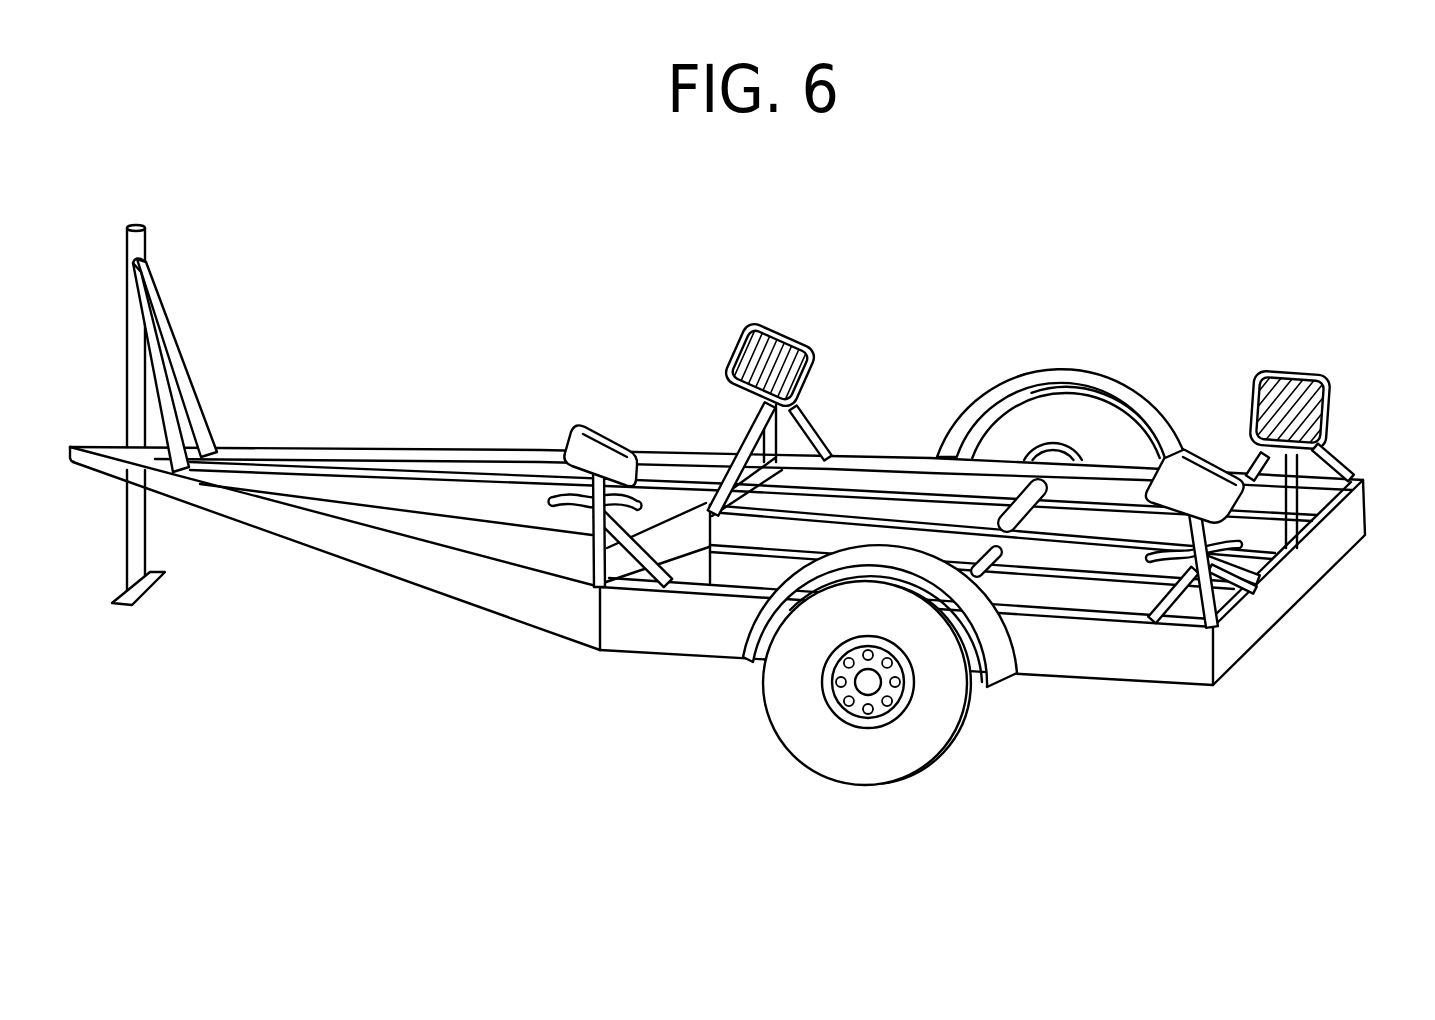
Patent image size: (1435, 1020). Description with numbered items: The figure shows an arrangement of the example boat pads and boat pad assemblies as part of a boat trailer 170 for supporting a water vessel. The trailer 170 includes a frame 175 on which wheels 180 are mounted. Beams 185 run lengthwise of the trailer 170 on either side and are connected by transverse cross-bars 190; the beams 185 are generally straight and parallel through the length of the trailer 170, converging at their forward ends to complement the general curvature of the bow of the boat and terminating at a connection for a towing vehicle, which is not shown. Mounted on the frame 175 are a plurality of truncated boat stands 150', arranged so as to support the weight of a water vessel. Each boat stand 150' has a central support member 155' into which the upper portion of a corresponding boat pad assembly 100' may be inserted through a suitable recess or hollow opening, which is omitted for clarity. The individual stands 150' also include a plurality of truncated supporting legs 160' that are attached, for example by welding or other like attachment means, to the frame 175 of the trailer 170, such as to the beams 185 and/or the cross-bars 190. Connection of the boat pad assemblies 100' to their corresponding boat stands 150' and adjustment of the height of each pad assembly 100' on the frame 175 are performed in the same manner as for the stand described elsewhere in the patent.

The boat pad assembly 100' is at (876, 474).
The boat stand 150' is at (993, 402).
The central support member 155' is at (931, 621).
The supporting leg 160' is at (1063, 456).
The trailer 170 is at (522, 726).
The frame 175 is at (422, 600).
The wheel 180 is at (997, 718).
The beam 185 is at (1153, 680).
The cross-bar 190 is at (943, 480).